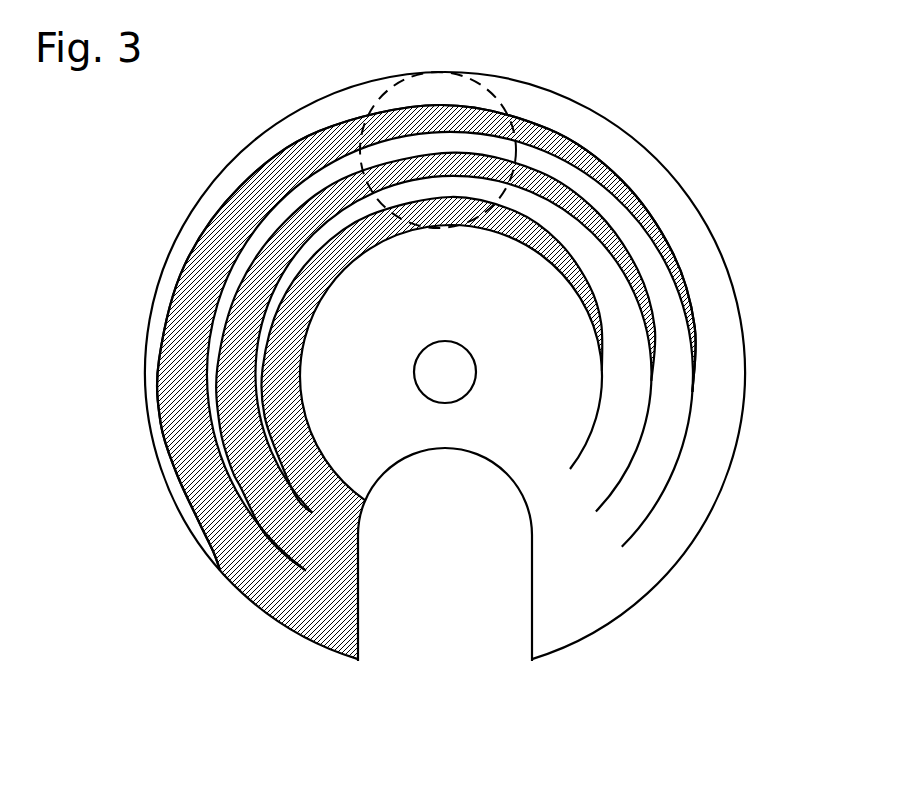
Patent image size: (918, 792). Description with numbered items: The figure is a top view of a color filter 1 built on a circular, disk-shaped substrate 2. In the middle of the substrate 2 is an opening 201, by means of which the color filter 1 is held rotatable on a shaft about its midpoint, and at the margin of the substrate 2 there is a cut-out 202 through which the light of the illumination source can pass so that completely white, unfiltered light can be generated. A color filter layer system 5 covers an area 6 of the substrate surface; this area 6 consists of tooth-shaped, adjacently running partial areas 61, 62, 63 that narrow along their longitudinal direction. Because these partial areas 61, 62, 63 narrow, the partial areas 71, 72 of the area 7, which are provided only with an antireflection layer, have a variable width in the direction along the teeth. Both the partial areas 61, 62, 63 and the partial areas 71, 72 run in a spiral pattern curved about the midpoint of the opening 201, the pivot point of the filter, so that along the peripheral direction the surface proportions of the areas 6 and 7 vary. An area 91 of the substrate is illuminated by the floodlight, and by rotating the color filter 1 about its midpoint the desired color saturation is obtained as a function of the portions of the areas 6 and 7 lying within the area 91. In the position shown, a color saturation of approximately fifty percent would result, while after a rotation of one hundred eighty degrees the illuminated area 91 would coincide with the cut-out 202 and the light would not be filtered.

The color filter 1 is at (799, 97).
The substrate 2 is at (732, 265).
The color filter layer system 5 is at (196, 236).
The area 6 is at (297, 610).
The partial area 61 is at (531, 127).
The partial area 62 is at (540, 177).
The partial area 63 is at (563, 257).
The area 7 is at (583, 582).
The partial area 71 is at (673, 323).
The partial area 72 is at (613, 432).
The area 91 is at (390, 92).
The opening 201 is at (418, 352).
The cut-out 202 is at (532, 573).